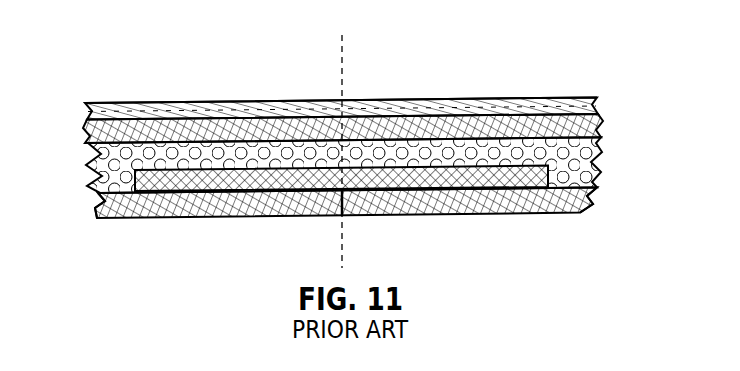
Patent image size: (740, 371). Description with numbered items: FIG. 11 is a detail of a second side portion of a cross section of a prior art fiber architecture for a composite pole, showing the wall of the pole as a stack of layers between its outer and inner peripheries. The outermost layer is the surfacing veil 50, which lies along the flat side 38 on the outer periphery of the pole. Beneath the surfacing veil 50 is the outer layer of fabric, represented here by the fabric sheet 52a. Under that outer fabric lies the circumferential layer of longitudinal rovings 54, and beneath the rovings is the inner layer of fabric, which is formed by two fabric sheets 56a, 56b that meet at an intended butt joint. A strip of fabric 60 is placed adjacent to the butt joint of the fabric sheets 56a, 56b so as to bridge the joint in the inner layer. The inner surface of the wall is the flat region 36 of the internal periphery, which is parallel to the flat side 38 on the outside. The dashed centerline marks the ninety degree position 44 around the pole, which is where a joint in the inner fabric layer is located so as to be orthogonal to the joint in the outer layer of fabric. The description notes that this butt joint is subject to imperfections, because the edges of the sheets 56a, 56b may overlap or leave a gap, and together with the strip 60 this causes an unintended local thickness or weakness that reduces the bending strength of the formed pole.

The flat regions 36 is at (452, 213).
The flat sides 38 is at (415, 100).
The 90° position 44 is at (340, 78).
The surfacing veil 50 is at (248, 108).
The fabric sheet 52a is at (150, 124).
The circumferential layer of longitudinal rovings 54 is at (315, 148).
The fabric sheet 56a is at (152, 197).
The fabric sheet 56b is at (557, 213).
The strip of fabric 60 is at (233, 186).